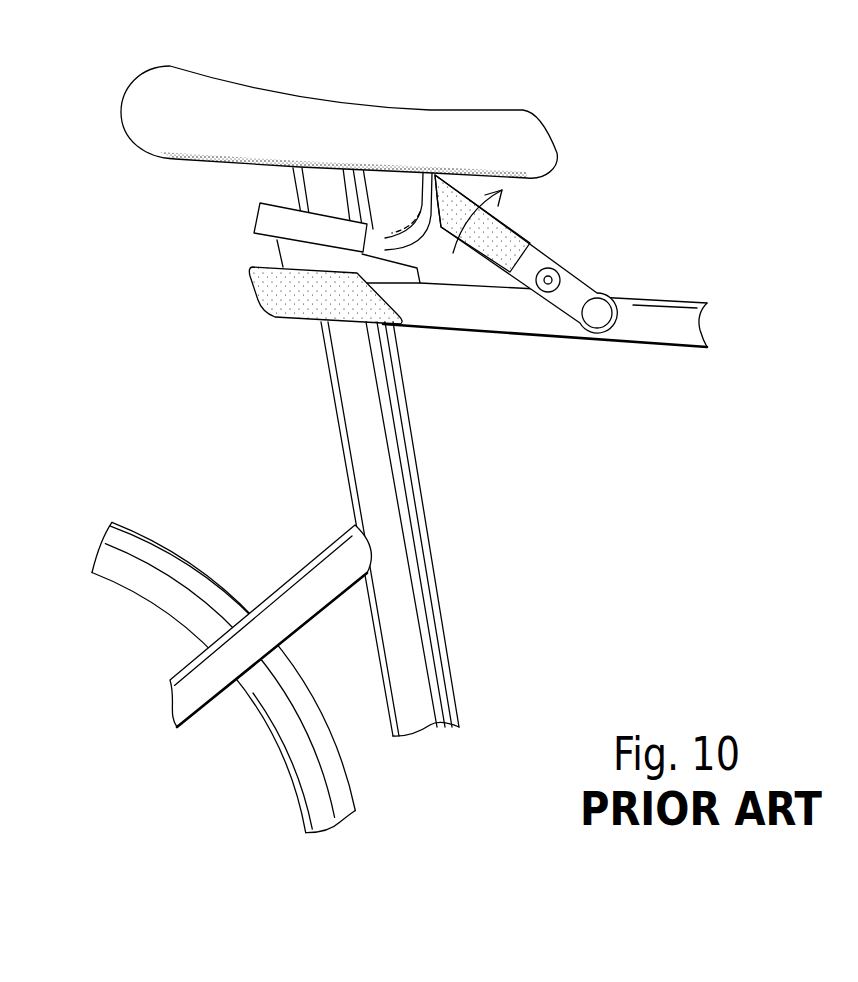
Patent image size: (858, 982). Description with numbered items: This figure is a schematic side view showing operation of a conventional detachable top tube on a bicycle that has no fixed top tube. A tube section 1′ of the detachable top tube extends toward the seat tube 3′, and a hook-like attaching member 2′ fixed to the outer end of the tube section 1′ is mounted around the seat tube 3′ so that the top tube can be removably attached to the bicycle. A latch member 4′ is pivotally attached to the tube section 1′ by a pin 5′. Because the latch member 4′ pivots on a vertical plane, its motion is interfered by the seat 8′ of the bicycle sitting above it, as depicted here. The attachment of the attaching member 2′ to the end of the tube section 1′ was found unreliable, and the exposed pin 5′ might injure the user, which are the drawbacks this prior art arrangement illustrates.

The seat 8′ is at (426, 116).
The latch member 4′ is at (508, 237).
The pin 5′ is at (595, 315).
The attaching member 2′ is at (270, 310).
The seat tube 3′ is at (380, 433).
The tube section 1′ is at (670, 322).